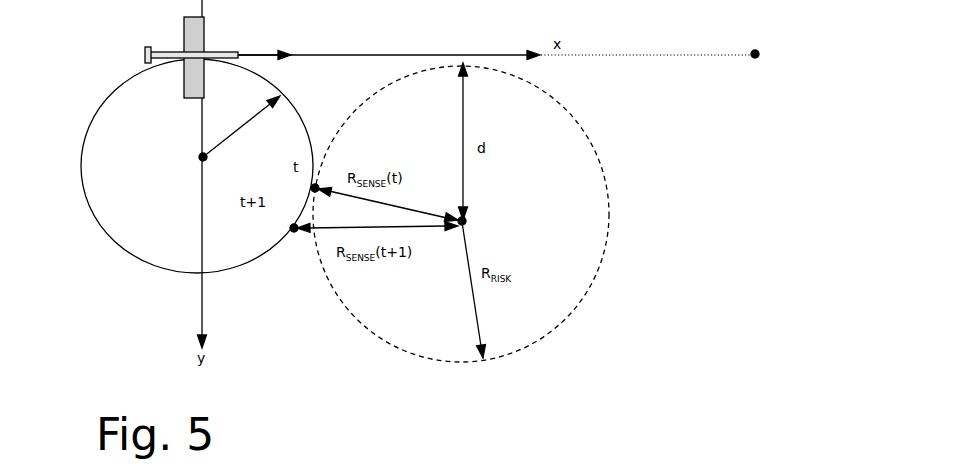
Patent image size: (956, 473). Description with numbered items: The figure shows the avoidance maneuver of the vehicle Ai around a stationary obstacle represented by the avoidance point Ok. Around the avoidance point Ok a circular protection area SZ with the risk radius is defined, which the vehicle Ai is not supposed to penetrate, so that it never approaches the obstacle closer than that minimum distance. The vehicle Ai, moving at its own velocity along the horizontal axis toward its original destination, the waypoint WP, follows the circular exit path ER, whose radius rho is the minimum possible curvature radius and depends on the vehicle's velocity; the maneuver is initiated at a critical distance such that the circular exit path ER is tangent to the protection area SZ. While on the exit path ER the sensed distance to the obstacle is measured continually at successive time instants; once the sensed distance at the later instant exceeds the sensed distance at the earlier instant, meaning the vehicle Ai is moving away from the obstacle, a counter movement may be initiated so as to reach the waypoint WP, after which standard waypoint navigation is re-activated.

The circular exit path ER is at (172, 182).
The vehicle Ai is at (218, 57).
The protection area SZ is at (486, 214).
The avoidance point Ok is at (503, 221).
The waypoint WP is at (795, 57).